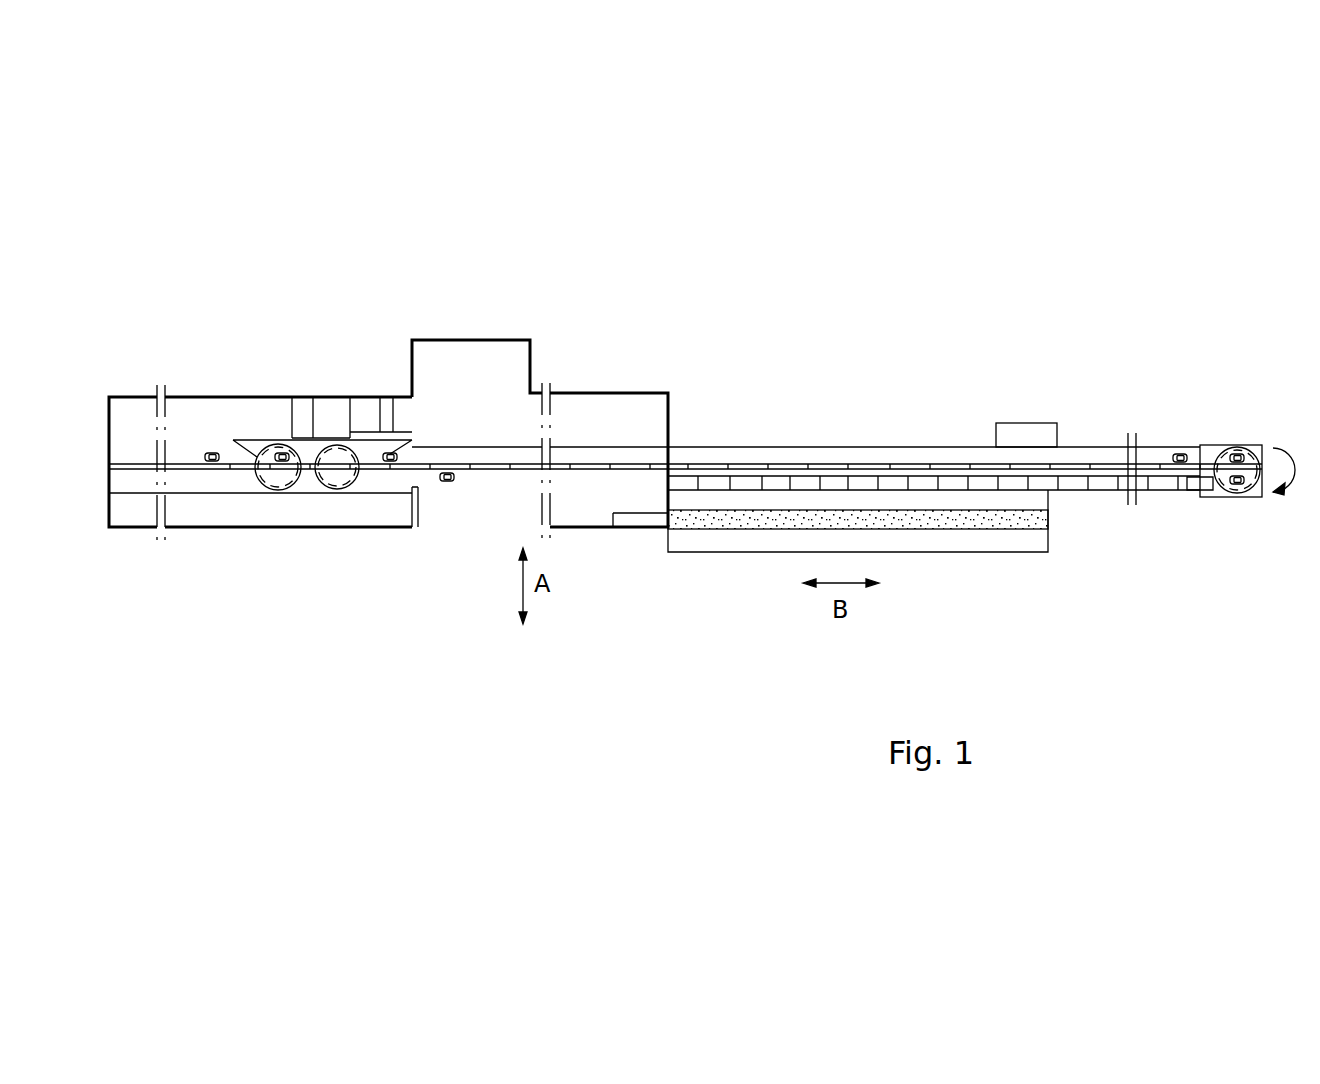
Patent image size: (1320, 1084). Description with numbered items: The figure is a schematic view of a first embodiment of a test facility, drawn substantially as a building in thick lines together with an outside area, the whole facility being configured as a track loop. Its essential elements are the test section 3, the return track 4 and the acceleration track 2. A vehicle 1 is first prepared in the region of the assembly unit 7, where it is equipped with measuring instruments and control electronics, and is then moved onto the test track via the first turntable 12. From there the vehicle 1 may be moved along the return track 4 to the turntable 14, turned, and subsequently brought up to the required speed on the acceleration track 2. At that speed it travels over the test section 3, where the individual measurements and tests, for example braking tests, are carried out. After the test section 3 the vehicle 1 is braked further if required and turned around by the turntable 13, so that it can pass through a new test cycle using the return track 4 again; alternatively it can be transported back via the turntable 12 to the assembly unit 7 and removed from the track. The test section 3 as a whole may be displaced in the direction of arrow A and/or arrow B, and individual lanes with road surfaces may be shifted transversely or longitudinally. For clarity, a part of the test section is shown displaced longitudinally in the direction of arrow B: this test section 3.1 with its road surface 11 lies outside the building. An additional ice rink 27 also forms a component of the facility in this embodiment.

The vehicle 1 is at (396, 448).
The acceleration track 2 is at (1097, 492).
The test section 3 is at (477, 495).
The test section 3.1 is at (707, 540).
The return track 4 is at (792, 463).
The assembly unit 7 is at (203, 413).
The road surface 11 is at (965, 520).
The first turntable 12 is at (275, 480).
The turntable 13 is at (333, 480).
The turntable 14 is at (1224, 456).
The ice rink 27 is at (617, 408).